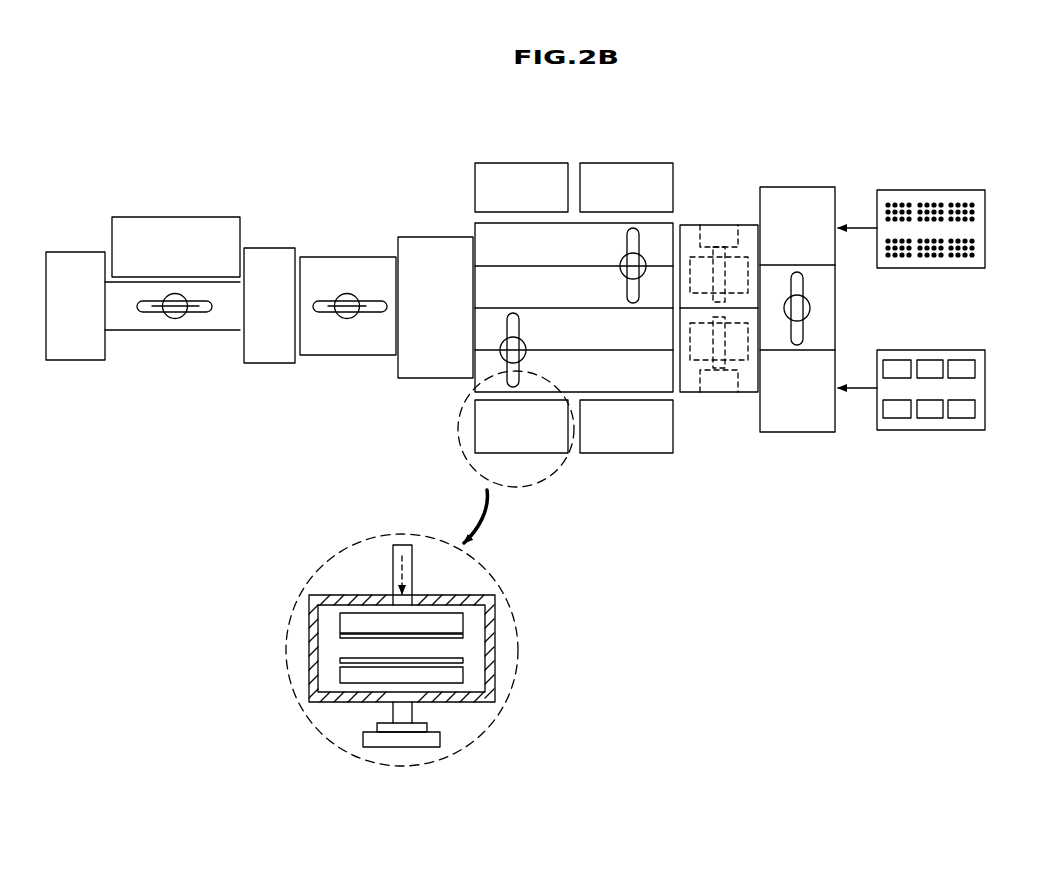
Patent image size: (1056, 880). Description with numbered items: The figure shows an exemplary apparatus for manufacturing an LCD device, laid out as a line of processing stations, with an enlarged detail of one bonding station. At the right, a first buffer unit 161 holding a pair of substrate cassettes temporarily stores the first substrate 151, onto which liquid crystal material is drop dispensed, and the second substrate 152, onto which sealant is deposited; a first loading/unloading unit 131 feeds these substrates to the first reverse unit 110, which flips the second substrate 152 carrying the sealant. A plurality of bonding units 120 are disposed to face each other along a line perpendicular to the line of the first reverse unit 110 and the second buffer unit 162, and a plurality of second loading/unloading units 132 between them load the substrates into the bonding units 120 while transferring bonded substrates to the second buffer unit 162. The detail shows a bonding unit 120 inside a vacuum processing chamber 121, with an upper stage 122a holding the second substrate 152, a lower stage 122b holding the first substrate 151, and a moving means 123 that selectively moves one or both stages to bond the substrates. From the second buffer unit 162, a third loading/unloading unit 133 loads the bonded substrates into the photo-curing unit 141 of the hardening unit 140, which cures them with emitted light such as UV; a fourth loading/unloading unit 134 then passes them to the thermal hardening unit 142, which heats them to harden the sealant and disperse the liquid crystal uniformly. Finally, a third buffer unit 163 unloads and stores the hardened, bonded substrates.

The first reverse unit 110 is at (752, 230).
The bonding unit 120 is at (527, 170).
The vacuum processing chamber 121 is at (492, 690).
The upper stage 122a is at (455, 622).
The lower stage 122b is at (350, 675).
The moving means 123 is at (393, 558).
The first loading/unloading unit 131 is at (810, 308).
The second loading/unloading units 132 is at (620, 270).
The third loading/unloading unit 133 is at (348, 294).
The fourth loading/unloading unit 134 is at (175, 318).
The hardening unit 140 is at (276, 167).
The photo-curing unit 141 is at (268, 252).
The thermal hardening unit 142 is at (185, 222).
The first substrate 151 is at (976, 186).
The second substrate 152 is at (976, 346).
The first buffer unit 161 is at (805, 195).
The second buffer unit 162 is at (436, 245).
The third buffer unit 163 is at (74, 366).